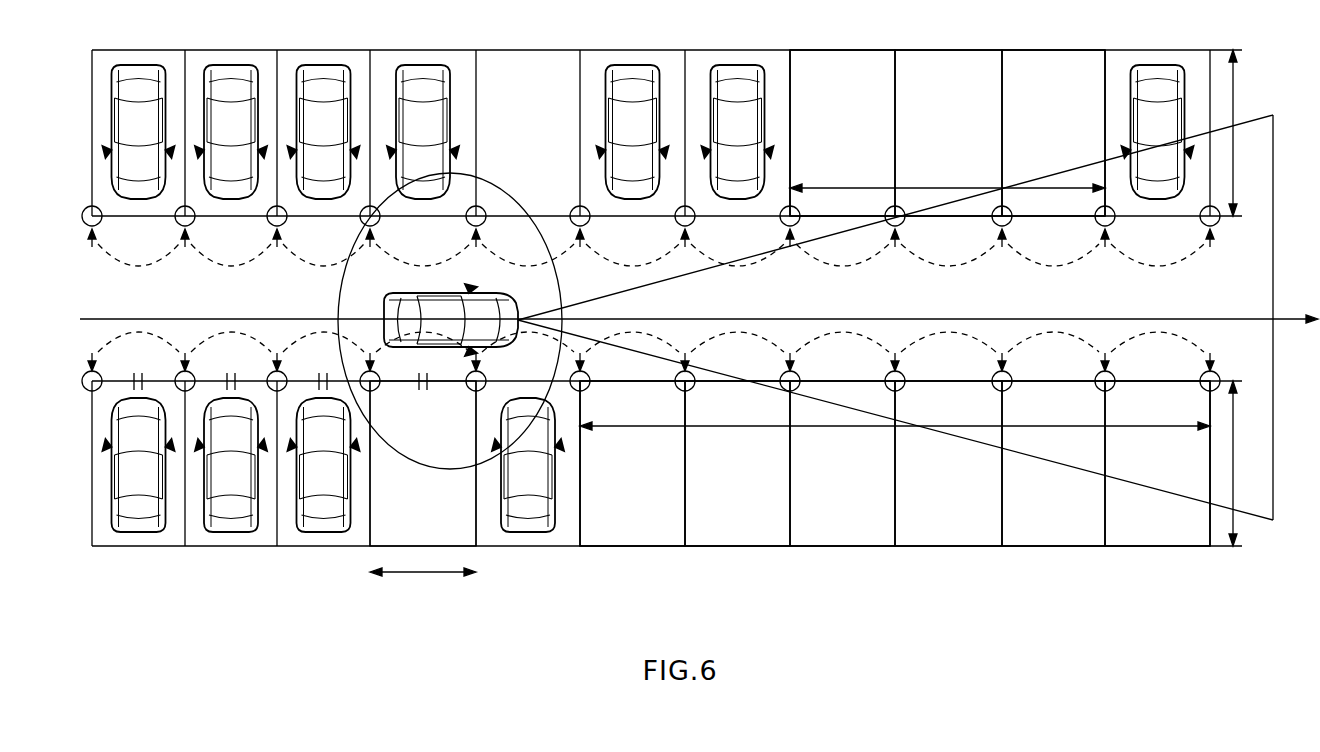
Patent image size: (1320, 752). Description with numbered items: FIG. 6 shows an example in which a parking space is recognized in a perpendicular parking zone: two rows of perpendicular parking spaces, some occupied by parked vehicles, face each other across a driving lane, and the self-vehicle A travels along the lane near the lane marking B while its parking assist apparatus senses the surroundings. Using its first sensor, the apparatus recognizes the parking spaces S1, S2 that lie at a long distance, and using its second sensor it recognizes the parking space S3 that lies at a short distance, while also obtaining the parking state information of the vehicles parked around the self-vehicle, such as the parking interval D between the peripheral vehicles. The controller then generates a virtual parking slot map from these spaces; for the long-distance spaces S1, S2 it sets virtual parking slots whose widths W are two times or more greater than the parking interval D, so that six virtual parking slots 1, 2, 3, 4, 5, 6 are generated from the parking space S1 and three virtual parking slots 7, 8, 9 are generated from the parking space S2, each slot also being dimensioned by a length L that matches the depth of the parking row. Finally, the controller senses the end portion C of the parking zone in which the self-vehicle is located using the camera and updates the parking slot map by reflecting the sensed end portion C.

The host vehicle A is at (450, 321).
The driving lane centerline B is at (699, 305).
The end portion of the parking zone C is at (918, 317).
The parking interval D is at (138, 337).
The parking space S1 is at (580, 548).
The parking space S2 is at (790, 50).
The parking space S3 is at (423, 463).
The width W is at (790, 383).
The parking space length L is at (1230, 298).
The virtual parking slot 1 is at (632, 463).
The virtual parking slot 2 is at (737, 463).
The virtual parking slot 3 is at (842, 463).
The virtual parking slot 4 is at (948, 463).
The virtual parking slot 5 is at (1053, 463).
The virtual parking slot 6 is at (1157, 463).
The virtual parking slot 7 is at (842, 133).
The virtual parking slot 8 is at (948, 133).
The virtual parking slot 9 is at (1053, 133).